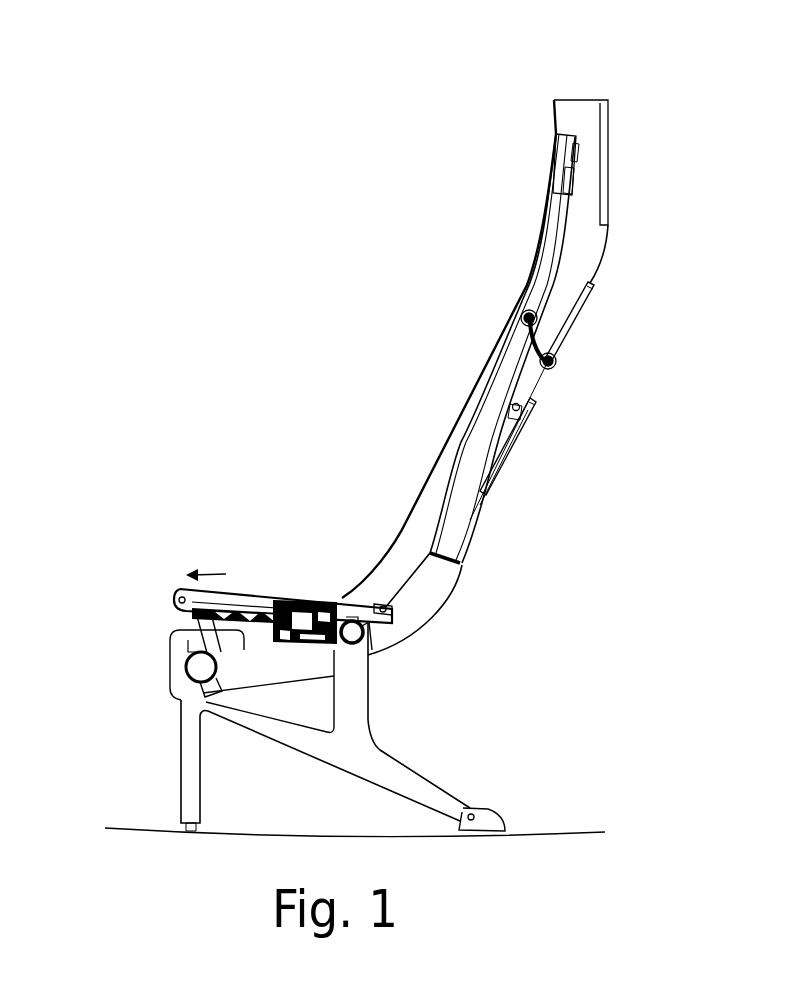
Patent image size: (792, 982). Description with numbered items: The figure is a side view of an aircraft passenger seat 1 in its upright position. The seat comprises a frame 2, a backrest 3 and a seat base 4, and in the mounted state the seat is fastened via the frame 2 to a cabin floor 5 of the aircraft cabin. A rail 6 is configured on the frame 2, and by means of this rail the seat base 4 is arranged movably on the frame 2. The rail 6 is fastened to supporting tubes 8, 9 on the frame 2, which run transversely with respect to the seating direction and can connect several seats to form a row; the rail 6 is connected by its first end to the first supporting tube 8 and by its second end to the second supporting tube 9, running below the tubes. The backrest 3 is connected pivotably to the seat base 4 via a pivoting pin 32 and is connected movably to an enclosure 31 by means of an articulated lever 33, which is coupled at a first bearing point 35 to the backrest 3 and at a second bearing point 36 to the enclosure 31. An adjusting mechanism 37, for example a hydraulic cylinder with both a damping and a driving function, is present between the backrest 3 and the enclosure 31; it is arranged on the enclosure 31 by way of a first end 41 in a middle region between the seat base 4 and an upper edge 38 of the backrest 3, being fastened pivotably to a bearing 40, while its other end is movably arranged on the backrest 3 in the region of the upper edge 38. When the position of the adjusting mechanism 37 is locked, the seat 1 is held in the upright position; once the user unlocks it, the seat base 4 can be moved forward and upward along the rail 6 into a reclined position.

The aircraft passenger seat 1 is at (283, 167).
The frame 2 is at (412, 728).
The backrest 3 is at (462, 566).
The seat base 4 is at (237, 577).
The cabin floor 5 is at (355, 855).
The rail 6 is at (243, 606).
The first supporting tube 8 is at (195, 670).
The second supporting tube 9 is at (366, 636).
The enclosure 31 is at (613, 238).
The pivoting pin 32 is at (382, 604).
The articulated lever 33 is at (542, 332).
The first bearing point 35 is at (524, 316).
The second bearing point 36 is at (553, 366).
The adjusting mechanism 37 is at (545, 372).
The upper edge of the backrest 38 is at (566, 130).
The bearing 40 is at (529, 410).
The first end of the adjusting mechanism 41 is at (518, 446).